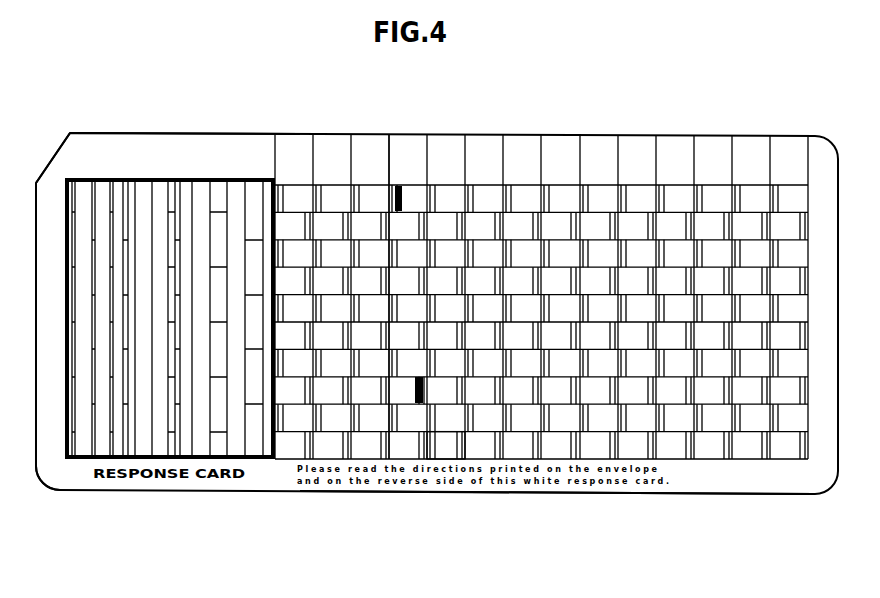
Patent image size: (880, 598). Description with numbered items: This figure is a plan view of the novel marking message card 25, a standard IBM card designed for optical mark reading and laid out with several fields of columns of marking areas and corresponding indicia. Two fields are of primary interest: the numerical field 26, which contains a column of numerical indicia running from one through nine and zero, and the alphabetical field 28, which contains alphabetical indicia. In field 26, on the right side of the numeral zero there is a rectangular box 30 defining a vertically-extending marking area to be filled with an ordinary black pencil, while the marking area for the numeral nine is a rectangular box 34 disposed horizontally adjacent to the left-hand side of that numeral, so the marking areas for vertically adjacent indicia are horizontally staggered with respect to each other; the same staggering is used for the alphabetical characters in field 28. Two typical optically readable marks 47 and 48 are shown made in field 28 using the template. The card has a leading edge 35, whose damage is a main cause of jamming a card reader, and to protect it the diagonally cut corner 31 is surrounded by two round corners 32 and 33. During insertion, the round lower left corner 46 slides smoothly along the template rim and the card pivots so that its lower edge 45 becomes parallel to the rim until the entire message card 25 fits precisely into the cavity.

The message card 25 is at (665, 137).
The numerical field 26 is at (541, 311).
The alphabetical field 28 is at (398, 137).
The rectangular box 30 is at (462, 448).
The diagonally cut corner 31 is at (60, 146).
The round corner 32 is at (63, 143).
The round corner 33 is at (37, 182).
The rectangular box 34 is at (432, 420).
The leading edge 35 is at (37, 376).
The lower edge 45 is at (702, 494).
The lower left corner 46 is at (46, 490).
The optically readable mark 47 is at (401, 186).
The optically readable mark 48 is at (410, 400).